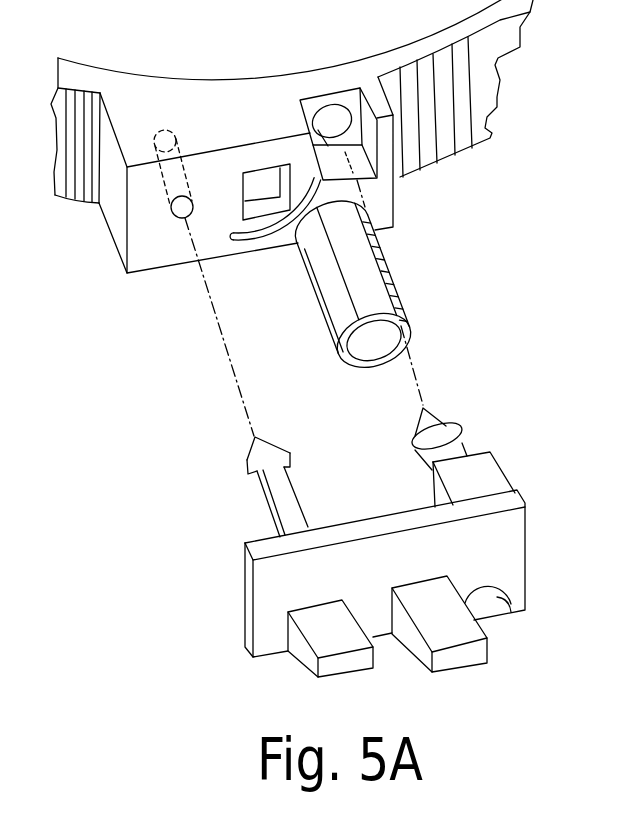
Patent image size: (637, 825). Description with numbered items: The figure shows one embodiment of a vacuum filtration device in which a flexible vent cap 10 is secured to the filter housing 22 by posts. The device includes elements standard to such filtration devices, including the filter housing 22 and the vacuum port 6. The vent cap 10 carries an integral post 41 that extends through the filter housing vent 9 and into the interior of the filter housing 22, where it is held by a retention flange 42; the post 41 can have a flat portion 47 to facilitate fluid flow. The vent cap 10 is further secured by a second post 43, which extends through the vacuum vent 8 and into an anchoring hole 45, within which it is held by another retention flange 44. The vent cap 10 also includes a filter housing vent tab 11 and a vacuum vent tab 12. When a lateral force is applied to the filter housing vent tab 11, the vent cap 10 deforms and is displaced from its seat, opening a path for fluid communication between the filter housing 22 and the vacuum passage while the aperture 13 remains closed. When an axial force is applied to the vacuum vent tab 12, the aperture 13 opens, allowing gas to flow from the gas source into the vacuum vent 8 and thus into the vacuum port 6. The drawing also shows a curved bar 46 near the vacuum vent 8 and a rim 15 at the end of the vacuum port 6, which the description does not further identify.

The vacuum port 6 is at (380, 310).
The vacuum vent 8 is at (370, 140).
The filter housing vent 9 is at (178, 218).
The flexible vent cap 10 is at (247, 580).
The filter housing vent tab 11 is at (344, 669).
The vacuum vent tab 12 is at (462, 657).
The aperture 13 is at (267, 165).
The sleeve end rim 15 is at (407, 328).
The filter housing 22 is at (494, 82).
The integral post 41 is at (272, 527).
The retention flange 42 is at (247, 469).
The post 43 is at (431, 465).
The retention flange 44 is at (455, 423).
The anchoring hole 45 is at (350, 100).
The curved bar 46 is at (246, 243).
The flat portion 47 is at (259, 441).